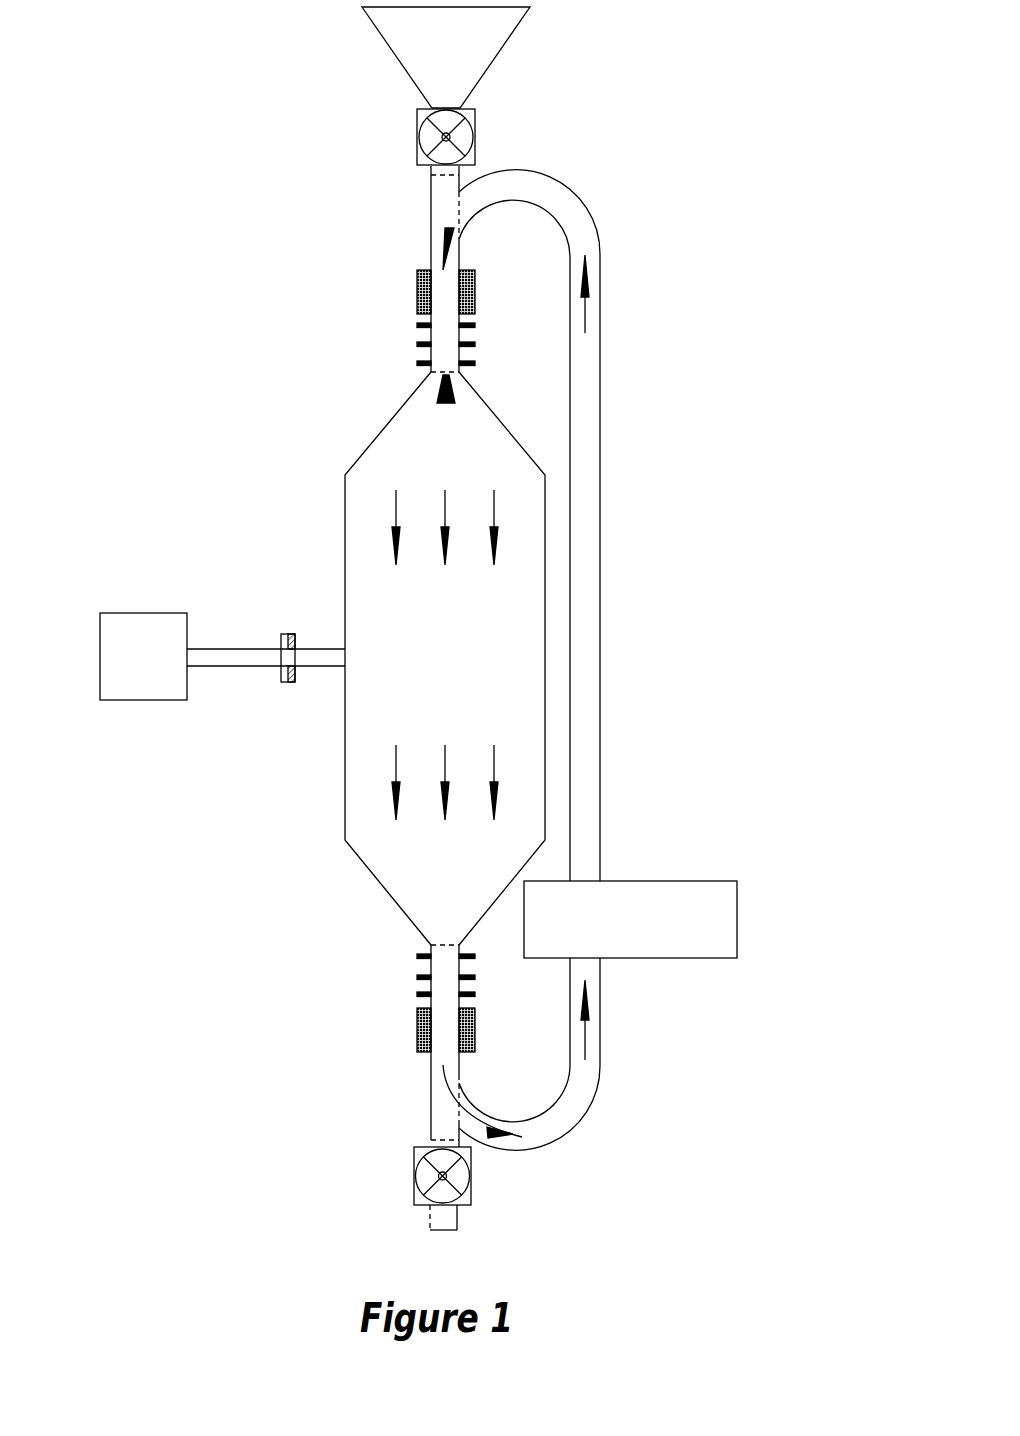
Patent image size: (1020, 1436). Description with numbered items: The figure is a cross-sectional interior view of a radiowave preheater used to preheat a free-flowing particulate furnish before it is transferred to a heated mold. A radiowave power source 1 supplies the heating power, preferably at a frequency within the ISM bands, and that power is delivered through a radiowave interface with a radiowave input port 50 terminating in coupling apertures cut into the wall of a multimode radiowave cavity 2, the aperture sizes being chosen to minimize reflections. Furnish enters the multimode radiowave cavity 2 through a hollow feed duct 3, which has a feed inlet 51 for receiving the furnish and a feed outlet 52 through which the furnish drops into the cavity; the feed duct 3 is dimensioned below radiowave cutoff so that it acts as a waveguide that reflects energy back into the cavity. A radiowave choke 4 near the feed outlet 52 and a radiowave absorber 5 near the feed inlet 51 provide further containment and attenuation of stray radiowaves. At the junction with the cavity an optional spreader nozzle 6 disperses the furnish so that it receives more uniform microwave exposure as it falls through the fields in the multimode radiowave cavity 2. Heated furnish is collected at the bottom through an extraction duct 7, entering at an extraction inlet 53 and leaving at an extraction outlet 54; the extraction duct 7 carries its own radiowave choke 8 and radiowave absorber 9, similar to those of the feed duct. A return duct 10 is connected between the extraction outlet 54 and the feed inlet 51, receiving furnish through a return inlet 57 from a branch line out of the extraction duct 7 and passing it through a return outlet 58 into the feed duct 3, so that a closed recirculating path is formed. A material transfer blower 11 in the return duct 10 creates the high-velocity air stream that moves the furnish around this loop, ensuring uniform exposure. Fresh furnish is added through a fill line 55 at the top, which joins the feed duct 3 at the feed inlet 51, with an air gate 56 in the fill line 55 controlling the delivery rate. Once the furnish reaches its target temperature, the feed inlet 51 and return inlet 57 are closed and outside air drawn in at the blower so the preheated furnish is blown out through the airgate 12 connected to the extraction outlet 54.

The radiowave power source 1 is at (222, 656).
The multimode radiowave cavity 2 is at (345, 502).
The feed duct 3 is at (400, 252).
The radiowave choke 4 is at (410, 342).
The radiowave absorber 5 is at (415, 280).
The spreader nozzle 6 is at (351, 406).
The extraction duct 7 is at (400, 1067).
The radiowave choke 8 is at (410, 977).
The radiowave absorber 9 is at (415, 1027).
The return duct 10 is at (605, 560).
The material transfer blower 11 is at (628, 942).
The airgate 12 is at (478, 1181).
The radiowave input port 50 is at (287, 658).
The feed inlet 51 is at (431, 176).
The feed outlet 52 is at (431, 372).
The extraction inlet 53 is at (431, 946).
The extraction outlet 54 is at (431, 1140).
The fill line 55 is at (572, 46).
The air gate 56 is at (480, 138).
The return inlet 57 is at (463, 1108).
The return outlet 58 is at (462, 222).